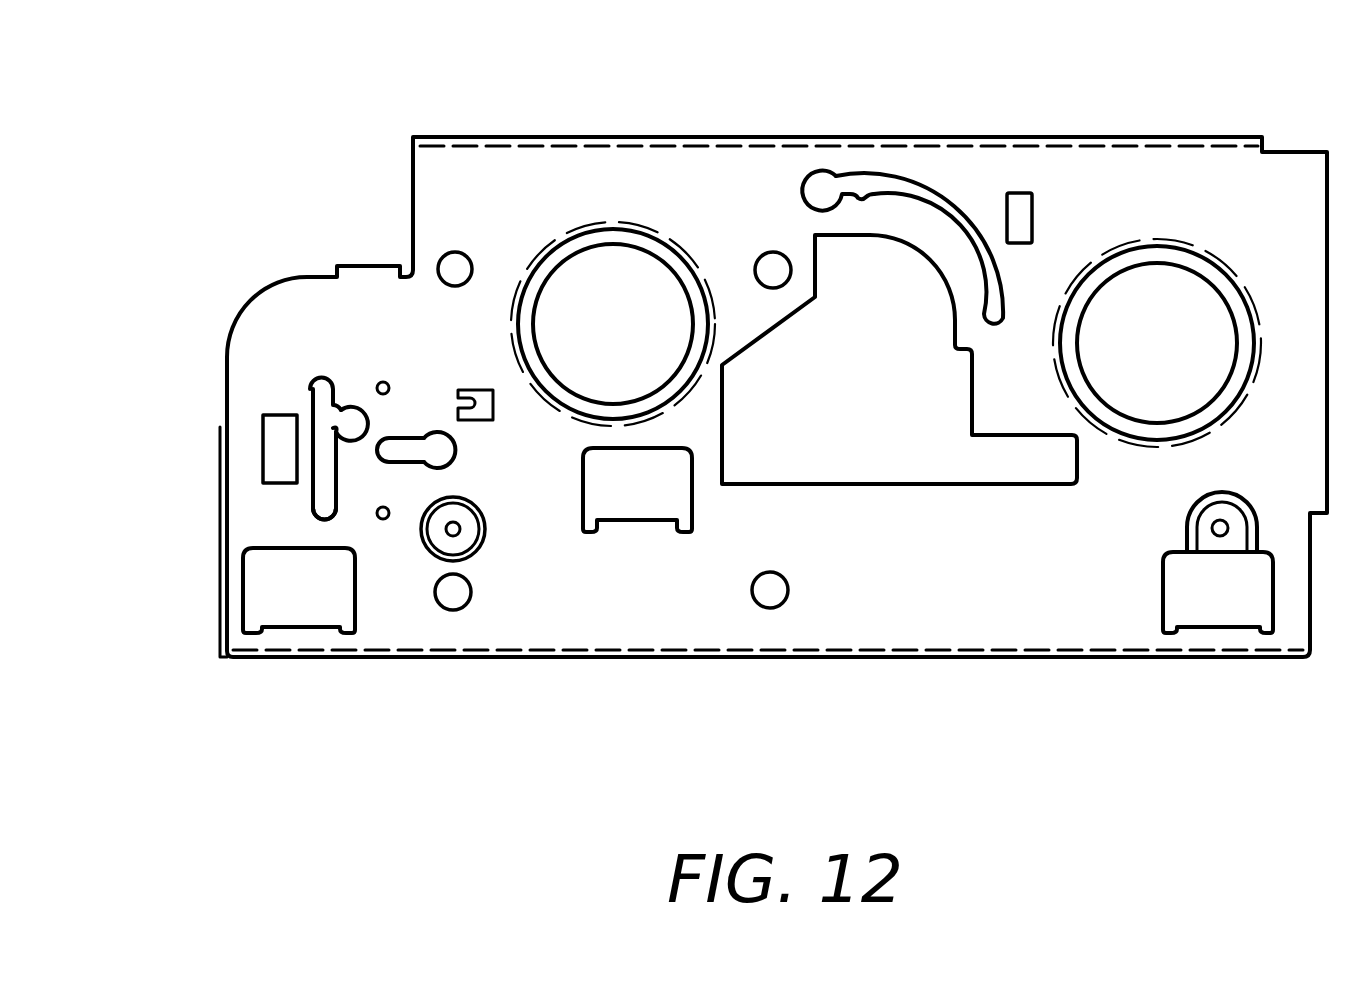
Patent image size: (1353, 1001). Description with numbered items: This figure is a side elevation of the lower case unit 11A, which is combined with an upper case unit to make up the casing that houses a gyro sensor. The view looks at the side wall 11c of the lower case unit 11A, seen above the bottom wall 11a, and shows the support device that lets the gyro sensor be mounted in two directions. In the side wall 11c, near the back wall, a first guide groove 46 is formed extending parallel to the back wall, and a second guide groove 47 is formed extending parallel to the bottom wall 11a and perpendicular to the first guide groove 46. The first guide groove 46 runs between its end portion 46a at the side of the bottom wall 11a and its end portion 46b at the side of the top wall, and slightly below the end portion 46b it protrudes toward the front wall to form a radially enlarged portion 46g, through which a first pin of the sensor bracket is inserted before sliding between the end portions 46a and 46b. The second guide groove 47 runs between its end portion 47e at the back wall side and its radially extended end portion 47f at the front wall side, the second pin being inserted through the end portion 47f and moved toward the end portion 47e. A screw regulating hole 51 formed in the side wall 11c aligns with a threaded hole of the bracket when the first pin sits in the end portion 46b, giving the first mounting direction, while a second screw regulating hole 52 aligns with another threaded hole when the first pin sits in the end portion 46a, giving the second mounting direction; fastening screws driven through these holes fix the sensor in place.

The lower case unit 11A is at (947, 137).
The side wall 11c is at (672, 167).
The bottom wall 11a is at (878, 660).
The first guide groove 46 is at (205, 491).
The end portion of first guide groove 46a is at (312, 522).
The end portion of first guide groove 46b is at (313, 378).
The radially enlarged portion 46g is at (350, 397).
The second guide groove 47 is at (467, 450).
The end portion of second guide groove 47e is at (373, 460).
The radially extended end portion 47f is at (463, 460).
The screw regulating hole 51 is at (382, 382).
The screw regulating hole 52 is at (386, 520).